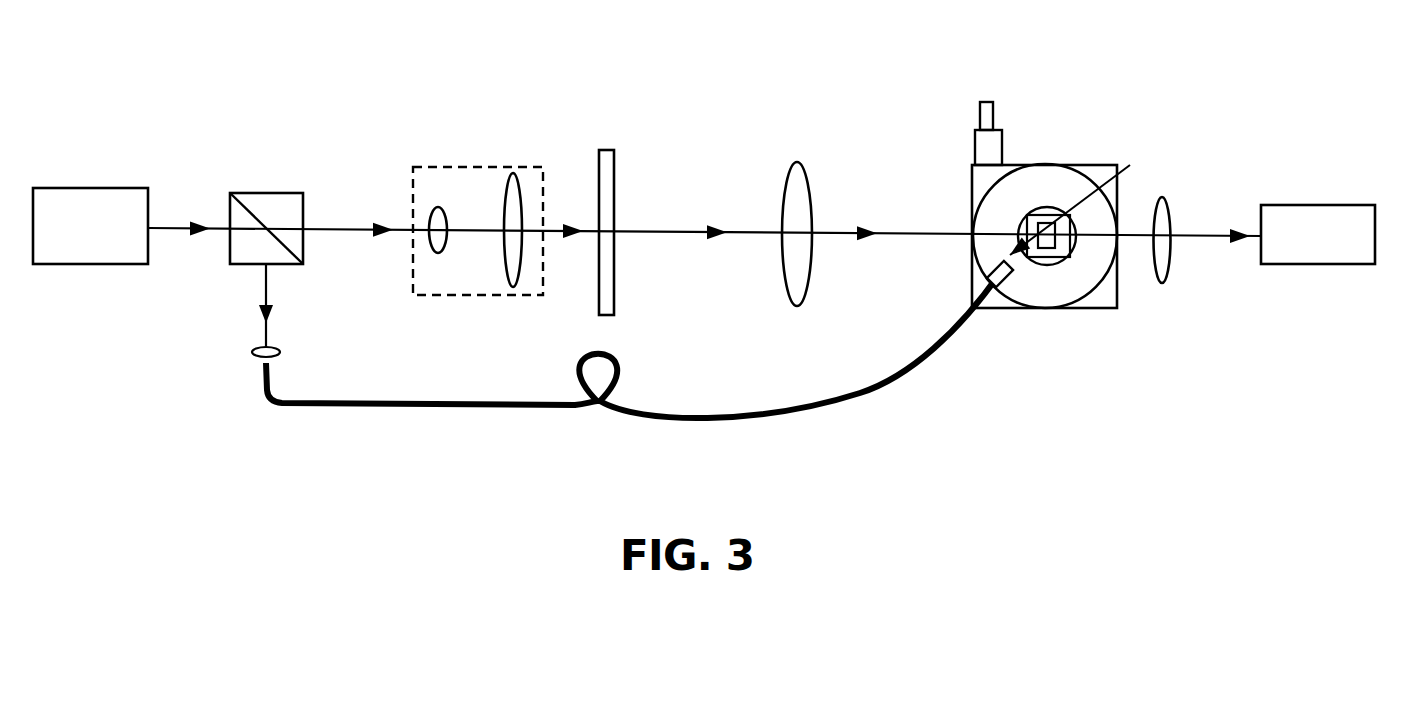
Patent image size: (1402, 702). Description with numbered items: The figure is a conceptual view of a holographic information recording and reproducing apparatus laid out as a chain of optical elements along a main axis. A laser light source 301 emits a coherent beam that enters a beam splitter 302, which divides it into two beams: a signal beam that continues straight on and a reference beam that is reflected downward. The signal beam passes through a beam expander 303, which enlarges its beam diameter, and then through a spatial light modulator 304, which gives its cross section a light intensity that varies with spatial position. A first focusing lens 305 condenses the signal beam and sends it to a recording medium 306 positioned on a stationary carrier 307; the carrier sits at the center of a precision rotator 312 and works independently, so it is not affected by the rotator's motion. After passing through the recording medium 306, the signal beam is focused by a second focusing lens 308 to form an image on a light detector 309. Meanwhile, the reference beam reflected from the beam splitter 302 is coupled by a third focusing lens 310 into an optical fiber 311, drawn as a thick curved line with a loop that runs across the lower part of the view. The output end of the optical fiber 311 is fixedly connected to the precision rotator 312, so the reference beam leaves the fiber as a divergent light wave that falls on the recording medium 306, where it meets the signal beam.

The laser light source 301 is at (98, 188).
The beam splitter 302 is at (270, 193).
The beam expander 303 is at (480, 167).
The spatial light modulator 304 is at (611, 150).
The first focusing lens 305 is at (800, 162).
The recording medium 306 is at (1048, 215).
The stationary carrier 307 is at (1057, 208).
The second focusing lens 308 is at (1160, 197).
The light detector 309 is at (1323, 205).
The third focusing lens 310 is at (250, 352).
The optical fiber 311 is at (460, 412).
The precision rotator 312 is at (1022, 290).